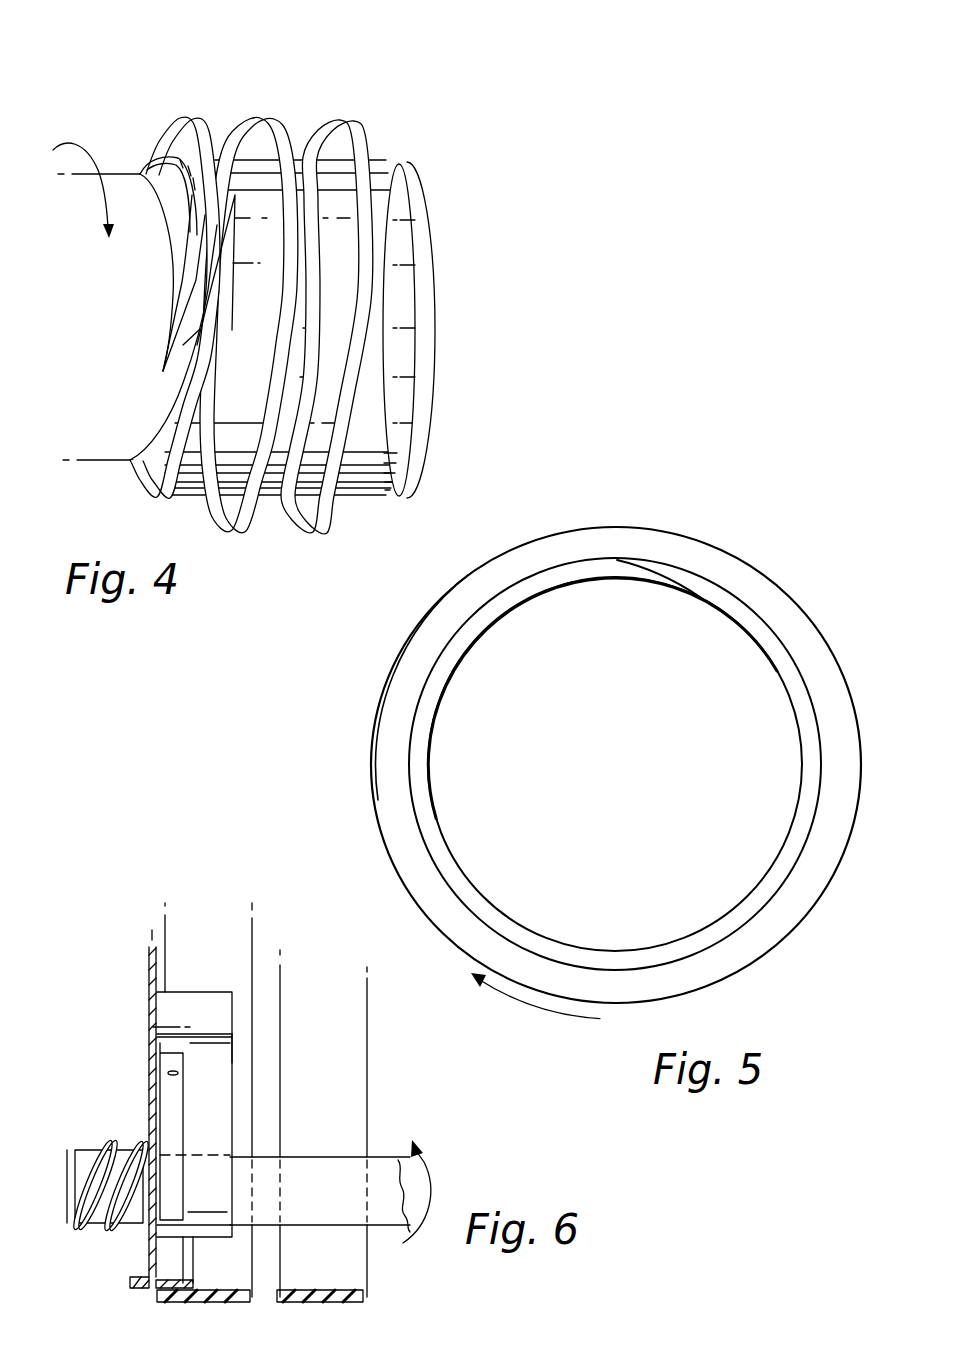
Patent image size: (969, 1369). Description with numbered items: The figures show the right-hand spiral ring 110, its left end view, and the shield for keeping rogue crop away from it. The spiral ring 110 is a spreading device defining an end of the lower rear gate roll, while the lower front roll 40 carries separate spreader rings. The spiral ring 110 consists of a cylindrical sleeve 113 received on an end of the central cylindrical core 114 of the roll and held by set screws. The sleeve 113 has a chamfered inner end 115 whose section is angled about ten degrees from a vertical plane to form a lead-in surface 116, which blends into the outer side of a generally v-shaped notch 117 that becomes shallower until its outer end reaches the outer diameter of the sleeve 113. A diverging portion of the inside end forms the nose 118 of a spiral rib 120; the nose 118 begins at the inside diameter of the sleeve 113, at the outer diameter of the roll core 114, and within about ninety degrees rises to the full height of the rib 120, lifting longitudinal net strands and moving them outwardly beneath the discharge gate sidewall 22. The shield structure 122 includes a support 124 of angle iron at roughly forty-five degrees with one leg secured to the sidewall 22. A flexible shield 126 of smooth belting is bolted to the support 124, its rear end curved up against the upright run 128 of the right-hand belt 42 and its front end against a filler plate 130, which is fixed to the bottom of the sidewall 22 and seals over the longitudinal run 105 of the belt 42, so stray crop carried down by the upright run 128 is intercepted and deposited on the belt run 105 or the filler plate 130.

In FIG. 4, the lower front roll 40 is at (106, 133).
In FIG. 4, the spiral ring 110 is at (270, 104).
In FIG. 5, the spiral ring 110 is at (646, 505).
In FIG. 6, the spiral ring 110 is at (118, 1138).
In FIG. 4, the cylindrical sleeve 113 is at (405, 350).
In FIG. 5, the cylindrical sleeve 113 is at (750, 607).
In FIG. 4, the central cylindrical core 114 is at (101, 318).
In FIG. 6, the central cylindrical core 114 is at (337, 1204).
In FIG. 4, the chamfered inner end 115 is at (162, 180).
In FIG. 5, the chamfered inner end 115 is at (398, 812).
In FIG. 4, the lead-in surface 116 is at (210, 348).
In FIG. 5, the lead-in surface 116 is at (773, 660).
In FIG. 4, the v-shaped notch 117 is at (217, 273).
In FIG. 4, the nose 118 is at (187, 350).
In FIG. 5, the nose 118 is at (547, 573).
In FIG. 4, the spiral rib 120 is at (365, 114).
In FIG. 5, the spiral rib 120 is at (752, 548).
In FIG. 6, the discharge gate sidewall 22 is at (147, 966).
In FIG. 6, the belt 42 is at (262, 1114).
In FIG. 6, the longitudinal belt run 105 is at (232, 1292).
In FIG. 6, the shield structure 122 is at (242, 1005).
In FIG. 6, the support 124 is at (157, 1053).
In FIG. 6, the flexible shield 126 is at (232, 1063).
In FIG. 6, the upright run 128 is at (227, 946).
In FIG. 6, the filler plate 130 is at (193, 1253).